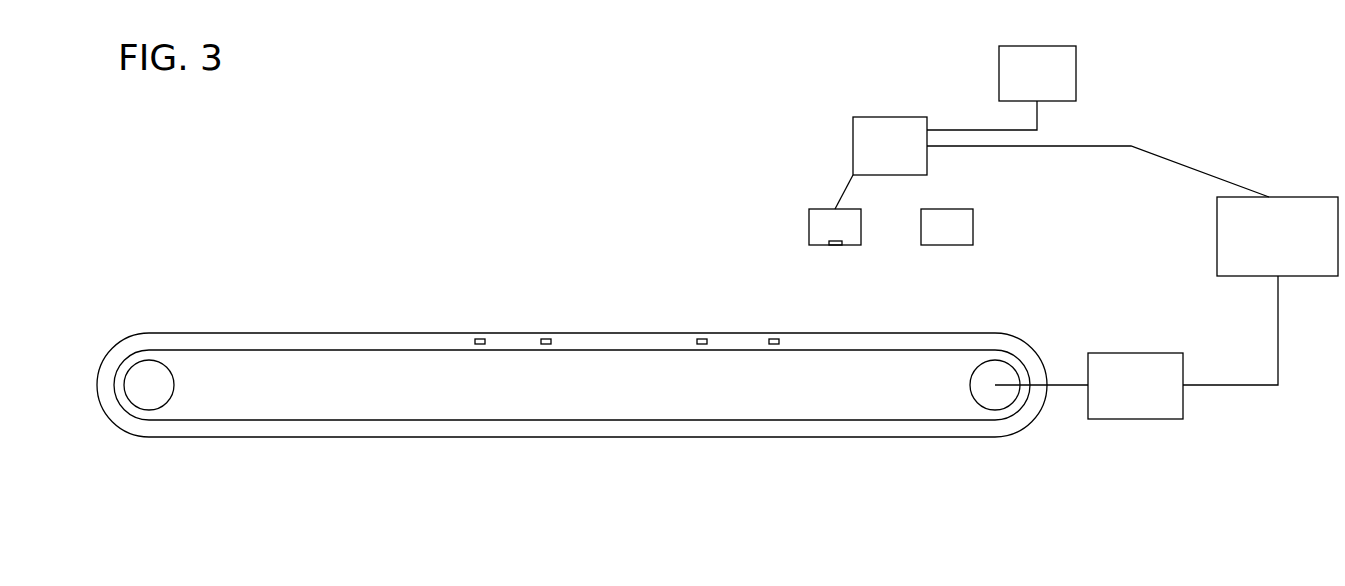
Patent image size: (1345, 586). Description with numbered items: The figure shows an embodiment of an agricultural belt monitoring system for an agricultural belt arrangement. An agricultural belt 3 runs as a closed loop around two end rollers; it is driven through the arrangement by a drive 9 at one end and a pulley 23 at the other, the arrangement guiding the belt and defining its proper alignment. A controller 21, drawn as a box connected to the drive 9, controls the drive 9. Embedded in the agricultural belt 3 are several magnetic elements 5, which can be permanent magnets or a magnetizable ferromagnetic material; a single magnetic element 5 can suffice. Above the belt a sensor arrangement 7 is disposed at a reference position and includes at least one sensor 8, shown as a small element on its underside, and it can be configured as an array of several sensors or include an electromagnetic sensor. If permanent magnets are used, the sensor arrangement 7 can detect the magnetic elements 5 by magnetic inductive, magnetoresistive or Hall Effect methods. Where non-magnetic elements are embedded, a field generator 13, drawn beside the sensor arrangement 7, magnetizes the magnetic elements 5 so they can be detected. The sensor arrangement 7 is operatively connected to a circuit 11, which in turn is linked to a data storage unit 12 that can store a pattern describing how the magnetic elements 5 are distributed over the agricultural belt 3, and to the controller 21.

The agricultural belt 3 is at (347, 333).
The magnetic elements 5 is at (773, 339).
The sensor arrangement 7 is at (829, 209).
The sensor 8 is at (829, 243).
The drive 9 is at (1140, 420).
The circuit 11 is at (902, 117).
The data storage unit 12 is at (1076, 67).
The field generator 13 is at (973, 228).
The controller 21 is at (1278, 197).
The pulley 23 is at (156, 397).